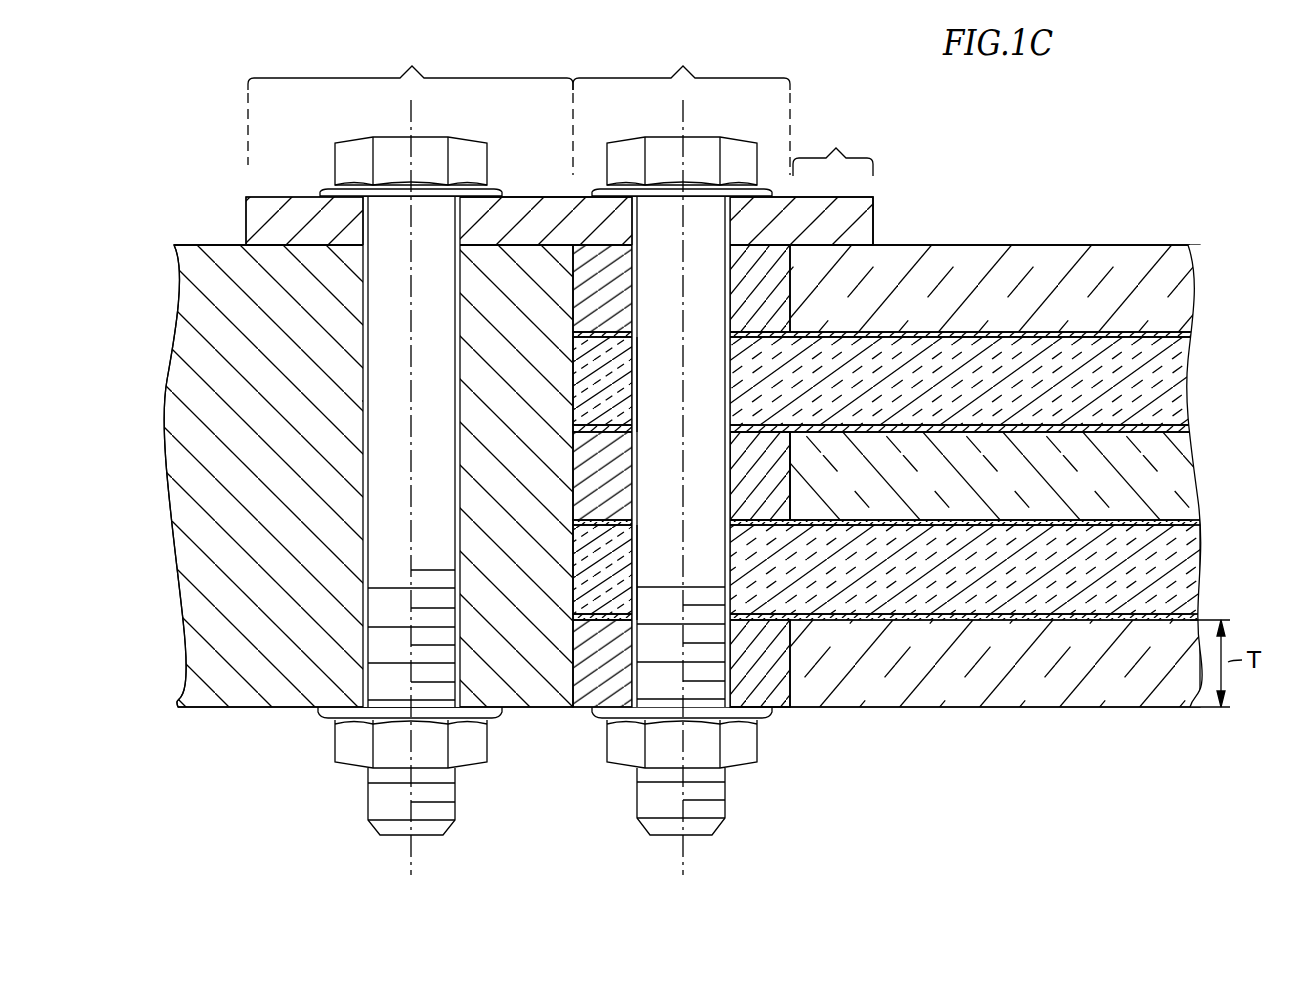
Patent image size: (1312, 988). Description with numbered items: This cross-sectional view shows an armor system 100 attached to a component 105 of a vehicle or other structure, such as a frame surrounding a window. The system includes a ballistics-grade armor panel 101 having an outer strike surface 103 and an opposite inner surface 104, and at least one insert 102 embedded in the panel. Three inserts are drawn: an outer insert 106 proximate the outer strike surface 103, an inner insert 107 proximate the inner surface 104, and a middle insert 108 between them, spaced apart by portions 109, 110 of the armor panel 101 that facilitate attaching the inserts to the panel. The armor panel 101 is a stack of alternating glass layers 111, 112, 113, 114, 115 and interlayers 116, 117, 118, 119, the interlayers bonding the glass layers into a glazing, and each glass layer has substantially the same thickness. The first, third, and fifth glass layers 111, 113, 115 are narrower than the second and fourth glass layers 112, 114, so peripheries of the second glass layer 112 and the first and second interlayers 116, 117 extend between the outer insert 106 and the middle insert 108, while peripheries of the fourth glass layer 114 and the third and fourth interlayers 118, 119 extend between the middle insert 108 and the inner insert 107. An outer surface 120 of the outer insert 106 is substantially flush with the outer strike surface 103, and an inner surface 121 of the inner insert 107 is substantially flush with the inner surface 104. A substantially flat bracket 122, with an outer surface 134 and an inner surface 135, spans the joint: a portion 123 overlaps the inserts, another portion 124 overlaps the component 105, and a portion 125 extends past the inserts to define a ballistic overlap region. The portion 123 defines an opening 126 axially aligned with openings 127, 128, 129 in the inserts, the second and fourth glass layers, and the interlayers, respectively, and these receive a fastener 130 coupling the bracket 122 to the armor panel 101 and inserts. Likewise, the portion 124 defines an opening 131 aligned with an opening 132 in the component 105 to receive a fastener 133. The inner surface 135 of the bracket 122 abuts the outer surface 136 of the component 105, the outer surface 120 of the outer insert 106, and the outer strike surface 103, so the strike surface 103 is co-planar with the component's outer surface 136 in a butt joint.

The armor system 100 is at (1155, 141).
The ballistics-grade armor panel 101 is at (1168, 244).
The insert 102 is at (760, 290).
The outer strike surface 103 is at (992, 244).
The inner surface 104 is at (1045, 707).
The component 105 is at (250, 478).
The outer insert 106 is at (800, 237).
The inner insert 107 is at (790, 690).
The middle insert 108 is at (760, 497).
The portion of the armor panel 109 is at (592, 383).
The portion of the armor panel 110 is at (592, 573).
The first glass layer 111 is at (1178, 282).
The second glass layer 112 is at (1175, 375).
The third glass layer 113 is at (1175, 465).
The fourth glass layer 114 is at (1178, 565).
The fifth glass layer 115 is at (1160, 685).
The first interlayer 116 is at (1190, 334).
The second interlayer 117 is at (1190, 428).
The third interlayer 118 is at (1190, 522).
The fourth interlayer 119 is at (1190, 616).
The outer surface of the outer insert 120 is at (748, 222).
The inner surface of the inner insert 121 is at (777, 712).
The bracket 122 is at (505, 219).
The portion of the bracket 123 is at (683, 68).
The portion of the bracket 124 is at (412, 68).
The portion of the bracket 125 is at (837, 152).
The opening 126 is at (632, 222).
The opening 127 is at (590, 286).
The opening 128 is at (595, 335).
The opening 129 is at (637, 432).
The fastener 130 is at (658, 800).
The opening 131 is at (360, 203).
The opening 132 is at (358, 398).
The fastener 133 is at (388, 800).
The outer surface of the bracket 134 is at (272, 197).
The inner surface of the bracket 135 is at (272, 247).
The outer surface of the component 136 is at (225, 245).